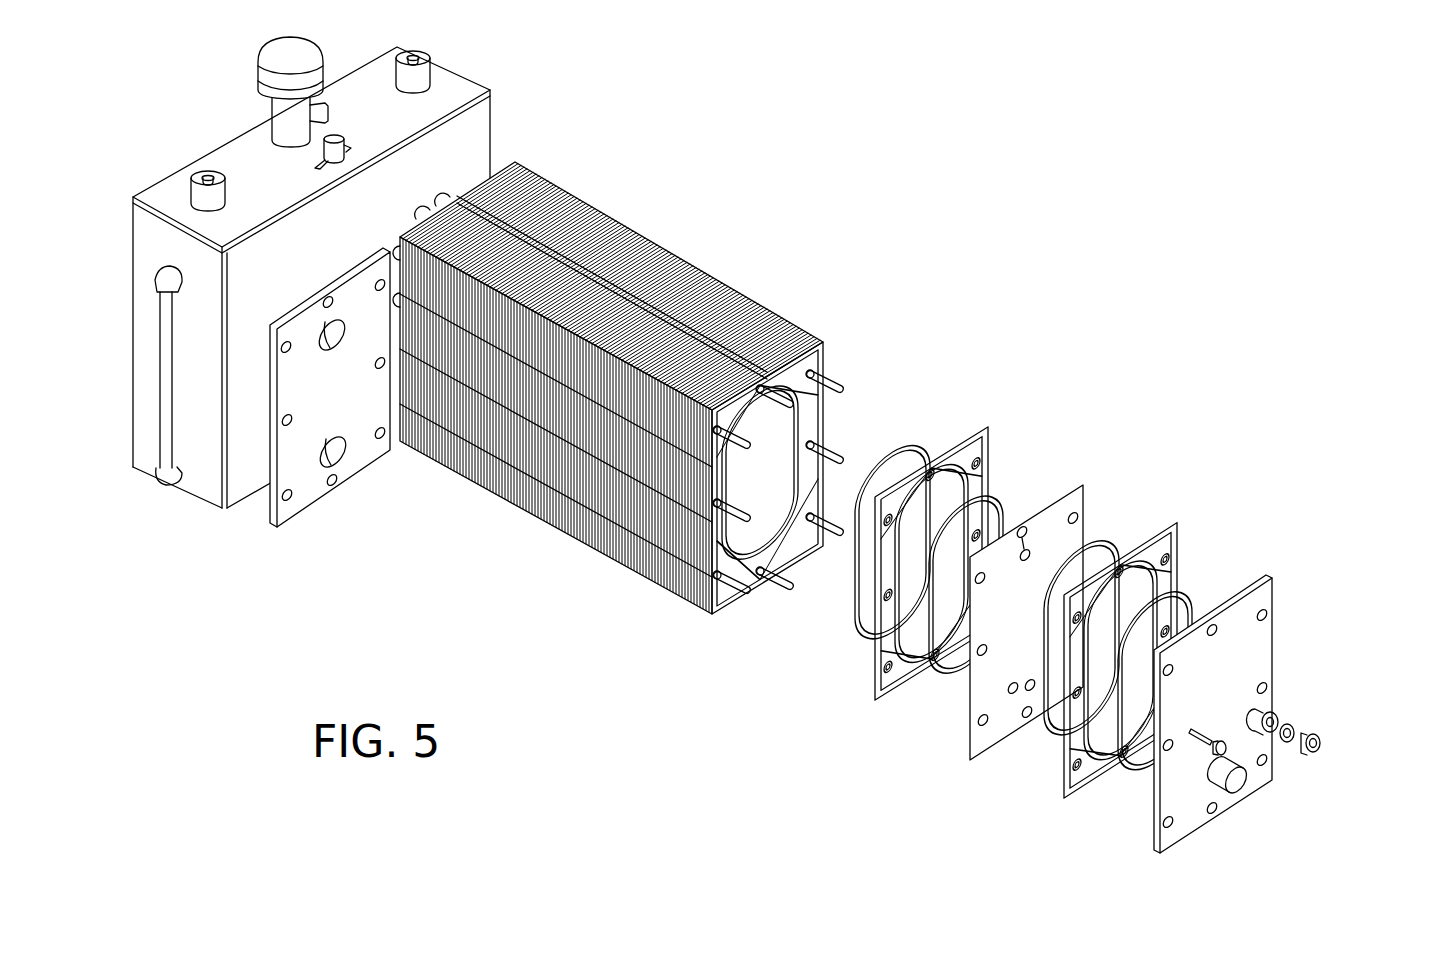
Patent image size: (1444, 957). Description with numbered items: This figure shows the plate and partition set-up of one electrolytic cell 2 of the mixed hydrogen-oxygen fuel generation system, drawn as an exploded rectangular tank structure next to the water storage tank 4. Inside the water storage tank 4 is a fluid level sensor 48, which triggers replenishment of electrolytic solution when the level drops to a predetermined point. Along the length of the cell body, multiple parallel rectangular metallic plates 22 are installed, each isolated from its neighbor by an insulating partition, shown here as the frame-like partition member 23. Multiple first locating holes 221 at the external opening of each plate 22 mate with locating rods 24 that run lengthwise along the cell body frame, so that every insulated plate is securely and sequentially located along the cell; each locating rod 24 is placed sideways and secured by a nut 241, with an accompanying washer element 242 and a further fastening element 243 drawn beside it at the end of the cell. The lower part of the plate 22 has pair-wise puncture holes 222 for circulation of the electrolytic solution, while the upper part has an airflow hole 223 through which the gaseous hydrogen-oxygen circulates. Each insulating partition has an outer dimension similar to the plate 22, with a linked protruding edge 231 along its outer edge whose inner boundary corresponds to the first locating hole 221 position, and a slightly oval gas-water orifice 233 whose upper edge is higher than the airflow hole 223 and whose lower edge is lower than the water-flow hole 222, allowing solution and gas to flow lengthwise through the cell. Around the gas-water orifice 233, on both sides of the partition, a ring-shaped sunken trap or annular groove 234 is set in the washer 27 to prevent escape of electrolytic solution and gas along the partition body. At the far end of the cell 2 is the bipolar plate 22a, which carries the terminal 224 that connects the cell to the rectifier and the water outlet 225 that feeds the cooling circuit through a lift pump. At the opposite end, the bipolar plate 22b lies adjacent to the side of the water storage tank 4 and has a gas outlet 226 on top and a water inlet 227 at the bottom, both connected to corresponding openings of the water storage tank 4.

The electrolytic cell 2 is at (738, 409).
The water storage tank 4 is at (213, 145).
The fluid level sensor 48 is at (162, 388).
The rectangular metallic plate 22 is at (1006, 610).
The bipolar plate 22a is at (1201, 737).
The bipolar plate 22b is at (268, 434).
The first locating hole 221 is at (1010, 694).
The puncture hole 222 is at (1026, 718).
The airflow hole 223 is at (1023, 527).
The terminal 224 is at (1192, 734).
The water outlet 225 is at (1238, 783).
The gas outlet 226 is at (333, 350).
The water inlet 227 is at (322, 462).
The frame 23 is at (963, 516).
The protruding edge 231 is at (984, 453).
The gas-water orifice 233 is at (1135, 596).
The annular groove 234 is at (1108, 778).
The locating rod 24 is at (742, 594).
The nut 241 is at (1320, 741).
The washer 242 is at (1293, 727).
The washer 243 is at (1272, 716).
The washer 27 is at (897, 457).